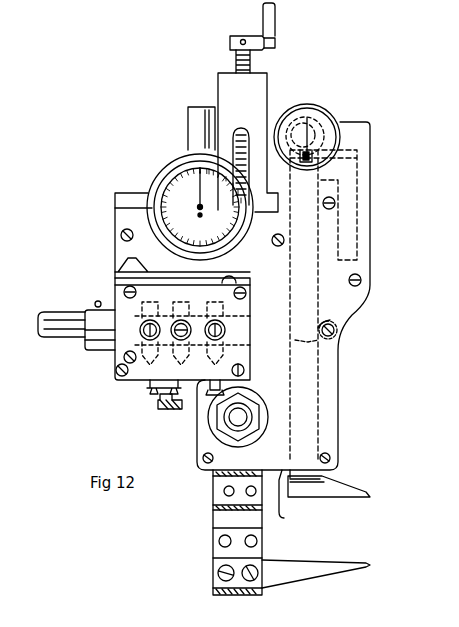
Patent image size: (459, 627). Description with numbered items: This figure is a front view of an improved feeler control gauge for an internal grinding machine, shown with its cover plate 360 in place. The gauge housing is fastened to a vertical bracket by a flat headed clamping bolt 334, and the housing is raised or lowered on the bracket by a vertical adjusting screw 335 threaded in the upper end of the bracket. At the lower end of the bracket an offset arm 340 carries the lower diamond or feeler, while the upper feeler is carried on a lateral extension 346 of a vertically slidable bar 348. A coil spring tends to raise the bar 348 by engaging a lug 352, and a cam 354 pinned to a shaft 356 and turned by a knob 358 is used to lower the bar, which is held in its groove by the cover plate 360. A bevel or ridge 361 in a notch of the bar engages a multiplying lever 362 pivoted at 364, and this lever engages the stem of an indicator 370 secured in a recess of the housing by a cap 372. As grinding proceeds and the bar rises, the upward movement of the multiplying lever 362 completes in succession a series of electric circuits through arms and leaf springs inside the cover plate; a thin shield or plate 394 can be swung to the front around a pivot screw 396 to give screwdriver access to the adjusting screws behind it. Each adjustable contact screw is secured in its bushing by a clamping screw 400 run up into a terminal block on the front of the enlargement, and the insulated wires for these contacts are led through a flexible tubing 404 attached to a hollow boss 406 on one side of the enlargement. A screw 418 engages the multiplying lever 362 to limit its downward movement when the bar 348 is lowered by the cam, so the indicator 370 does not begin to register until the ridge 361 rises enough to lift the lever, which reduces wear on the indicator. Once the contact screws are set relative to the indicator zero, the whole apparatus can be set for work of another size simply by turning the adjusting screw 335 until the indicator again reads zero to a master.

The screw 335 is at (246, 61).
The knob 358 is at (298, 106).
The cam 354 is at (317, 128).
The shaft 356 is at (308, 135).
The lug 352 is at (340, 162).
The indicator 370 is at (170, 196).
The cap 372 is at (115, 208).
The shield or plate 394 is at (122, 262).
The pivot screw 396 is at (230, 278).
The multiplying lever 362 is at (305, 322).
The pivot 364 is at (336, 330).
The bevel or ridge 361 is at (300, 341).
The cover plate 360 is at (330, 384).
The flexible tubing 404 is at (55, 340).
The hollow boss 406 is at (98, 350).
The clamping screw 400 is at (148, 394).
The screw 418 is at (160, 405).
The clamping bolt 334 is at (238, 417).
The vertically slidable bar 348 is at (279, 505).
The lateral extension 346 is at (332, 497).
The offset arm 340 is at (310, 570).